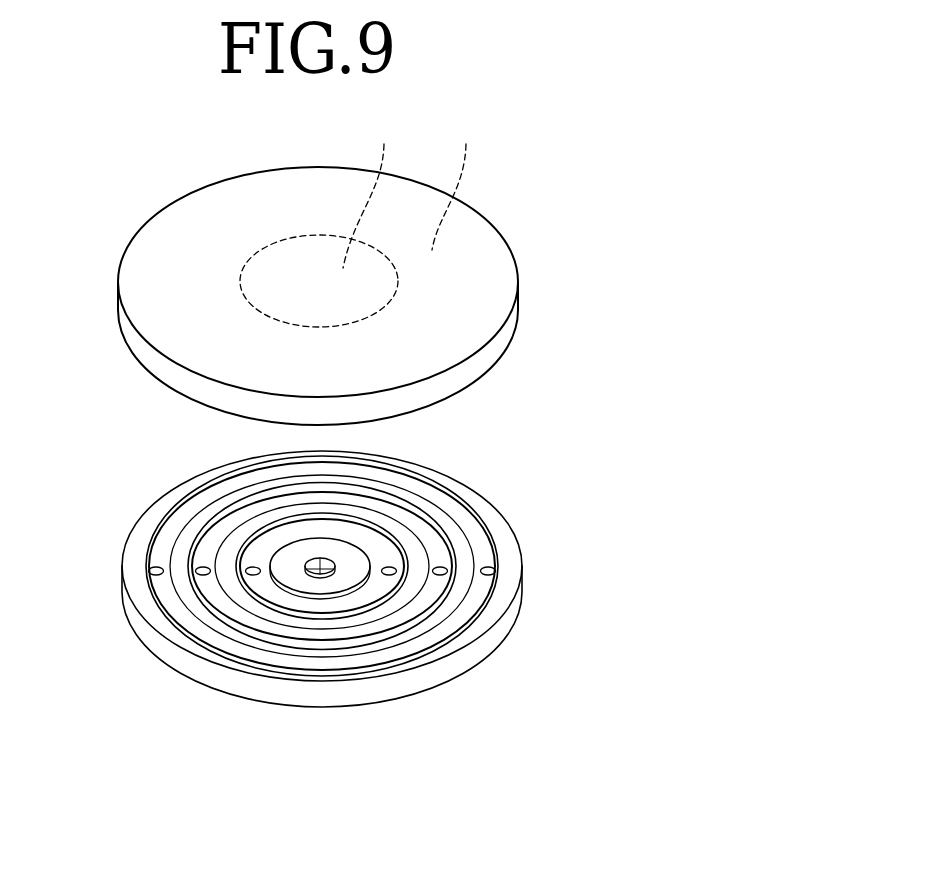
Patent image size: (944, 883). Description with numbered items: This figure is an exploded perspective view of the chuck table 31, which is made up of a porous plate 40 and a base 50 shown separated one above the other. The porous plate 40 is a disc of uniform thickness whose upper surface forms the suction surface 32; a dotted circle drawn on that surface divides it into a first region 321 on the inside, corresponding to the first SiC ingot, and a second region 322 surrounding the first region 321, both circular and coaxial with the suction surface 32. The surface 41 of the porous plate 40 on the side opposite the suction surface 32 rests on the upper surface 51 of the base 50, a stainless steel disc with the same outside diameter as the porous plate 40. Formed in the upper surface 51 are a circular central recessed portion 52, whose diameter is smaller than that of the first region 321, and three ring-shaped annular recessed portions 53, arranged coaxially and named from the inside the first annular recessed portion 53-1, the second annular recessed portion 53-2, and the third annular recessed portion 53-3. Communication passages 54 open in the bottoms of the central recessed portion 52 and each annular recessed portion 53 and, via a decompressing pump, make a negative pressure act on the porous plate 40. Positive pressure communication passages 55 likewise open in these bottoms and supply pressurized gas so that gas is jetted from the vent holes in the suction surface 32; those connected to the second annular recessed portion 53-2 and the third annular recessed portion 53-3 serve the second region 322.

The chuck table 31 is at (326, 255).
The suction surface 32 is at (490, 121).
The first region 321 is at (372, 194).
The second region 322 is at (457, 185).
The porous plate 40 is at (521, 302).
The surface 41 is at (149, 371).
The base 50 is at (347, 588).
The upper surface 51 is at (512, 560).
The central recessed portion 52 is at (328, 562).
The annular recessed portions 53 is at (389, 549).
The first annular recessed portion 53-1 is at (411, 521).
The second annular recessed portion 53-2 is at (479, 522).
The third annular recessed portion 53-3 is at (503, 526).
The communication passages 54 is at (316, 562).
The positive pressure communication passages 55 is at (334, 566).